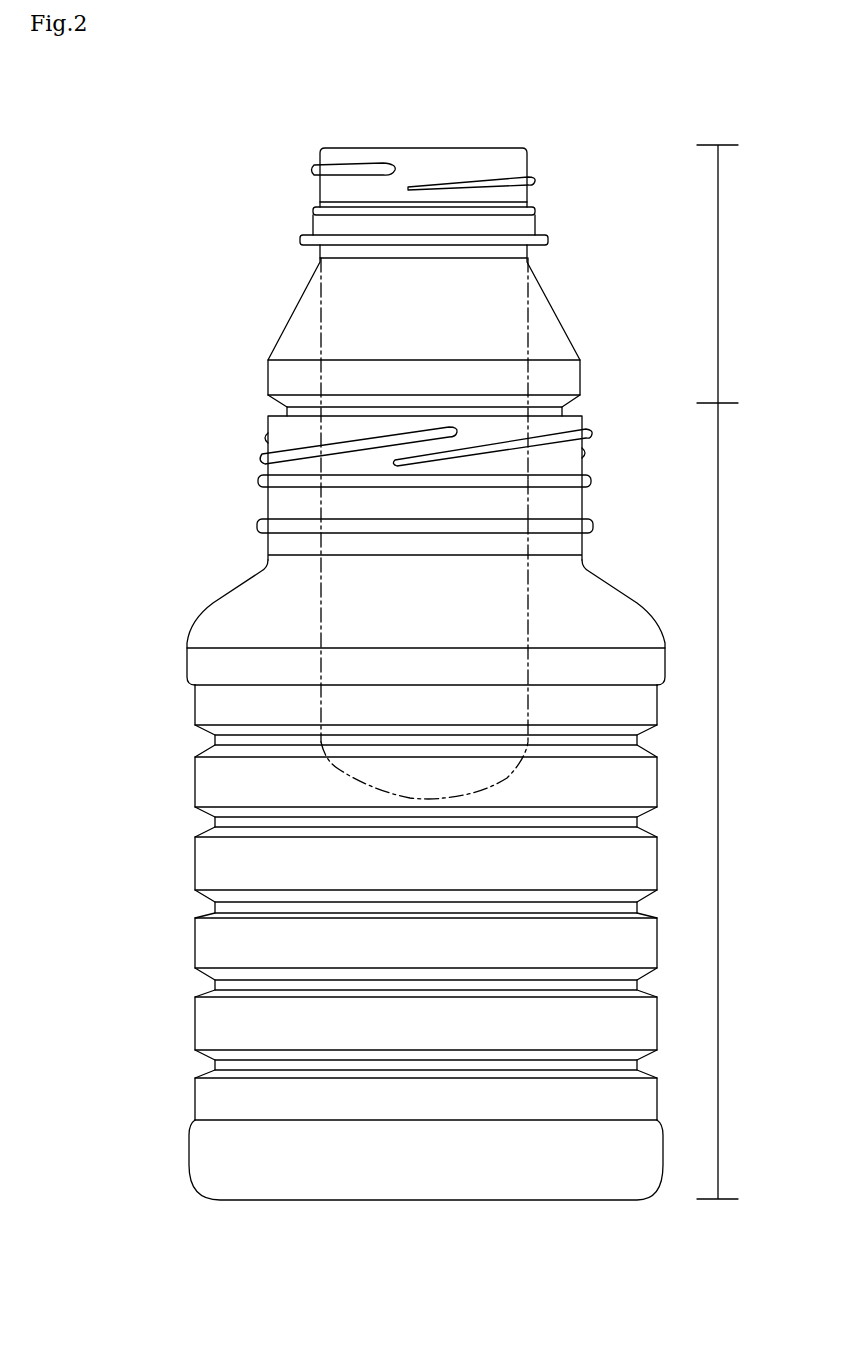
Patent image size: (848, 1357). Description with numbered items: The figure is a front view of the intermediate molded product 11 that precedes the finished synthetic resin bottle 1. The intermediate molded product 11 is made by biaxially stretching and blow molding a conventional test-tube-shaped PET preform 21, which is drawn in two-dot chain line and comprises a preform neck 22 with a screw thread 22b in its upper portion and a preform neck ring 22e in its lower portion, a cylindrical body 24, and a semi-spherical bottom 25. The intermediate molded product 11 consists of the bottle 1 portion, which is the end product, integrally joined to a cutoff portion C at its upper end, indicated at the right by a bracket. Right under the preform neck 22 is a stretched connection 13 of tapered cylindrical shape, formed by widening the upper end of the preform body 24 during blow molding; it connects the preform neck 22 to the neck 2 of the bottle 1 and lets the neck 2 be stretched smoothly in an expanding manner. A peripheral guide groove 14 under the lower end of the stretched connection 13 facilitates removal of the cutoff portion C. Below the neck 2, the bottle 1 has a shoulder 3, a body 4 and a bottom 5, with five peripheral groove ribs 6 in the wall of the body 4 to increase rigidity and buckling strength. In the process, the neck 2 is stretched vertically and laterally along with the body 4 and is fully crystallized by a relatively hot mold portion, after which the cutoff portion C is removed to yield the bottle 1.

The bottle 1 is at (435, 725).
The neck 2 is at (287, 503).
The shoulder 3 is at (253, 617).
The body 4 is at (374, 902).
The bottom 5 is at (217, 1166).
The peripheral groove ribs 6 is at (217, 822).
The intermediate molded product 11 is at (405, 241).
The stretched connection 13 is at (290, 318).
The peripheral guide groove 14 is at (287, 408).
The preform 21 is at (530, 313).
The preform neck 22 is at (352, 155).
The screw thread 22b is at (312, 171).
The preform neck ring 22e is at (300, 240).
The body 24 is at (528, 502).
The bottom 25 is at (320, 757).
The cutoff portion C is at (718, 272).